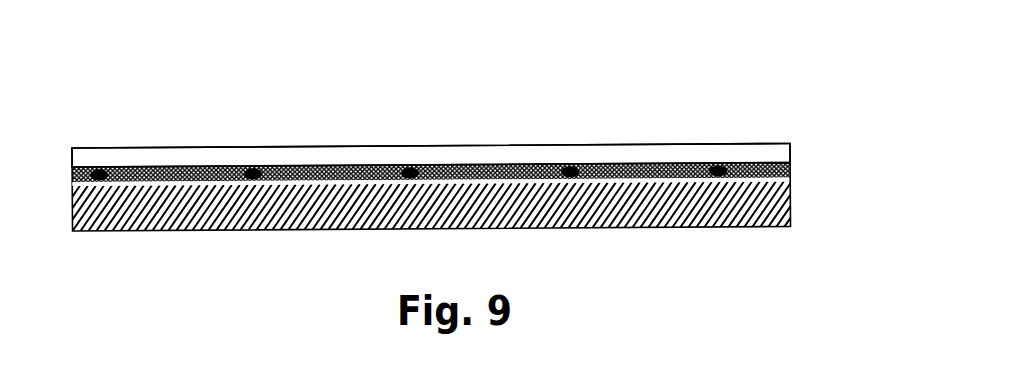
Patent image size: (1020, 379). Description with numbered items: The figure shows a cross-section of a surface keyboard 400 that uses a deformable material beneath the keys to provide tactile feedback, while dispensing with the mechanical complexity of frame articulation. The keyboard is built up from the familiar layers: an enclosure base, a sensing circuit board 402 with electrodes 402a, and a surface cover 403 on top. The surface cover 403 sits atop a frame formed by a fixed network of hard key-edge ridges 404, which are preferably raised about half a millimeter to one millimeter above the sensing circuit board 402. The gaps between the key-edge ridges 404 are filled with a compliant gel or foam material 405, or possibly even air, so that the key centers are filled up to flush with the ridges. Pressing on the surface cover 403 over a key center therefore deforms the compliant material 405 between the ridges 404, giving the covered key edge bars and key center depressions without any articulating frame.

The surface keyboard 400 is at (472, 80).
The sensing circuit board 402 is at (790, 215).
The electrodes 402a is at (167, 168).
The surface cover 403 is at (273, 147).
The key-edge ridges 404 is at (568, 167).
The compliant gel or foam material 405 is at (790, 172).